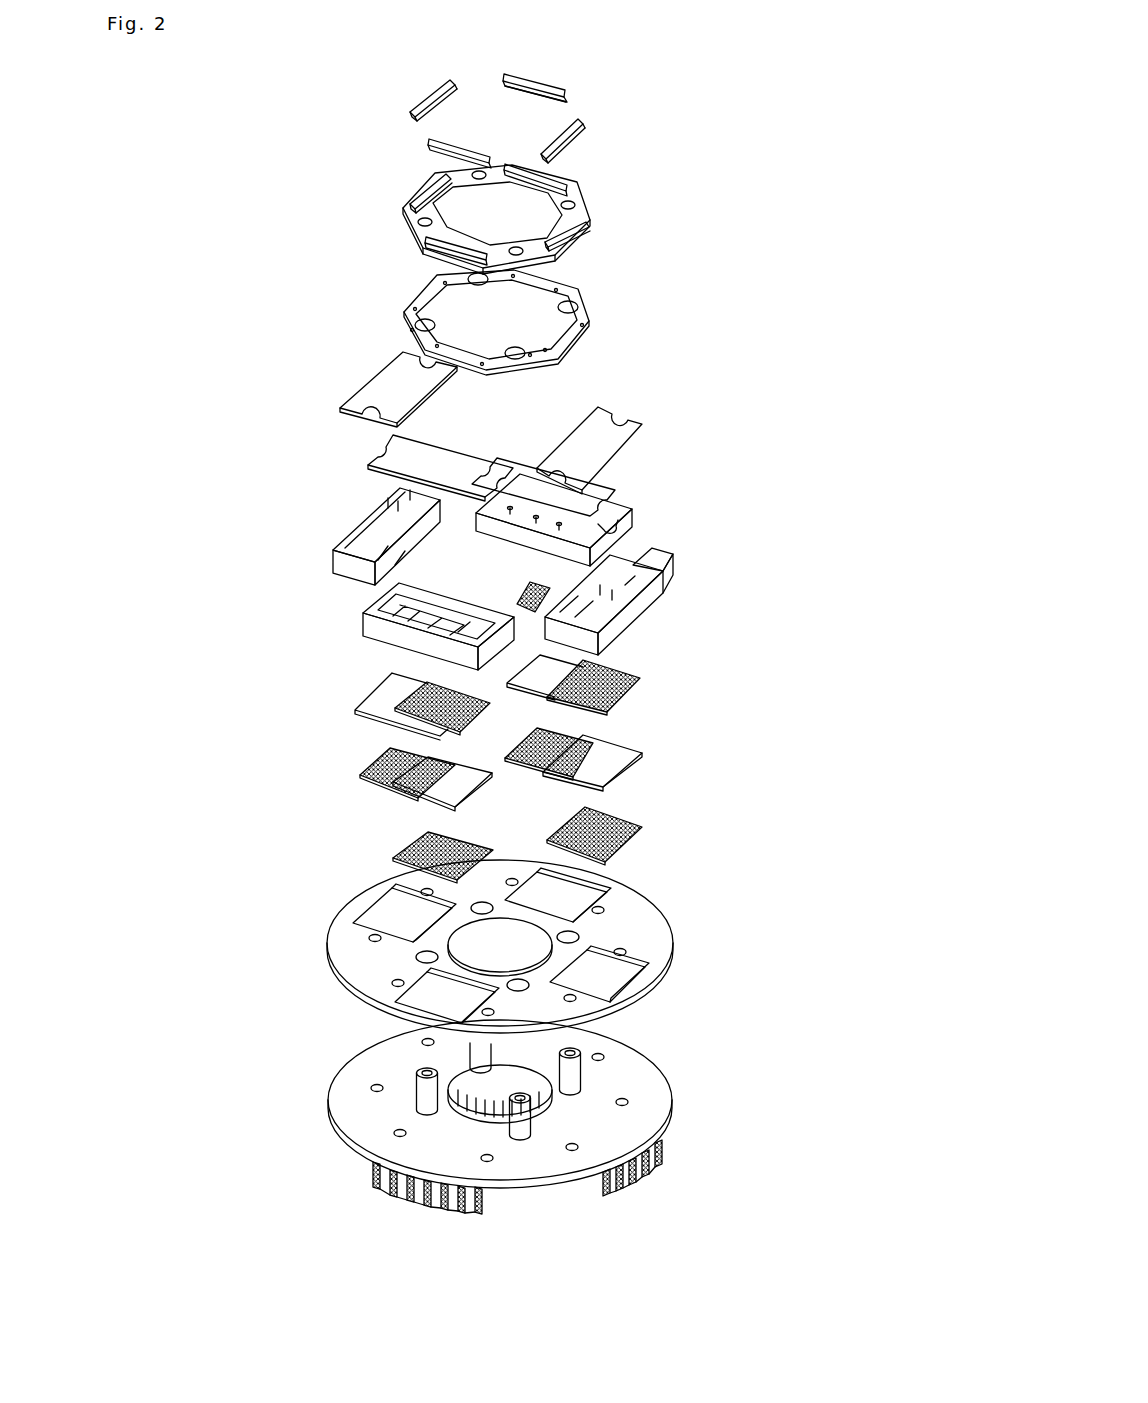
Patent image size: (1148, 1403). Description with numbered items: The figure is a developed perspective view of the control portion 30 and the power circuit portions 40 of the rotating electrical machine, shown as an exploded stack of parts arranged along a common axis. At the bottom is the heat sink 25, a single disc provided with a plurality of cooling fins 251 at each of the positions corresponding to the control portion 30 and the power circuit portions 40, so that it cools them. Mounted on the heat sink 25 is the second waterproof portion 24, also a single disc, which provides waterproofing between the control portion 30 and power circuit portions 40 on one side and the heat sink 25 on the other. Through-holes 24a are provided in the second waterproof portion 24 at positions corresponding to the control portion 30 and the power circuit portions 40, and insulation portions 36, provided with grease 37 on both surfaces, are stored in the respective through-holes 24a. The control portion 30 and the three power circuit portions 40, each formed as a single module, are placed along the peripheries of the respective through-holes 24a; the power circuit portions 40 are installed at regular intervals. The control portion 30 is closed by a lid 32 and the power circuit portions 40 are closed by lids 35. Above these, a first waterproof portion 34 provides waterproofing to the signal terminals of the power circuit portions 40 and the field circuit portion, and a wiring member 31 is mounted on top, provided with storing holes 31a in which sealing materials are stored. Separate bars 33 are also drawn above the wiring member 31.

The bar 33 is at (433, 148).
The wiring member 31 is at (577, 188).
The storing holes 31a is at (423, 243).
The first waterproof portion 34 is at (577, 292).
The lid 35 is at (378, 376).
The lid 32 is at (603, 492).
The control portion 30 is at (507, 560).
The power circuit portion 40 is at (340, 563).
The grease 37 is at (528, 590).
The insulation portion 36 is at (600, 650).
The second waterproof portion 24 is at (531, 937).
The through-holes 24a is at (590, 873).
The heat sink 25 is at (521, 1107).
The cooling fins 251 is at (470, 1085).